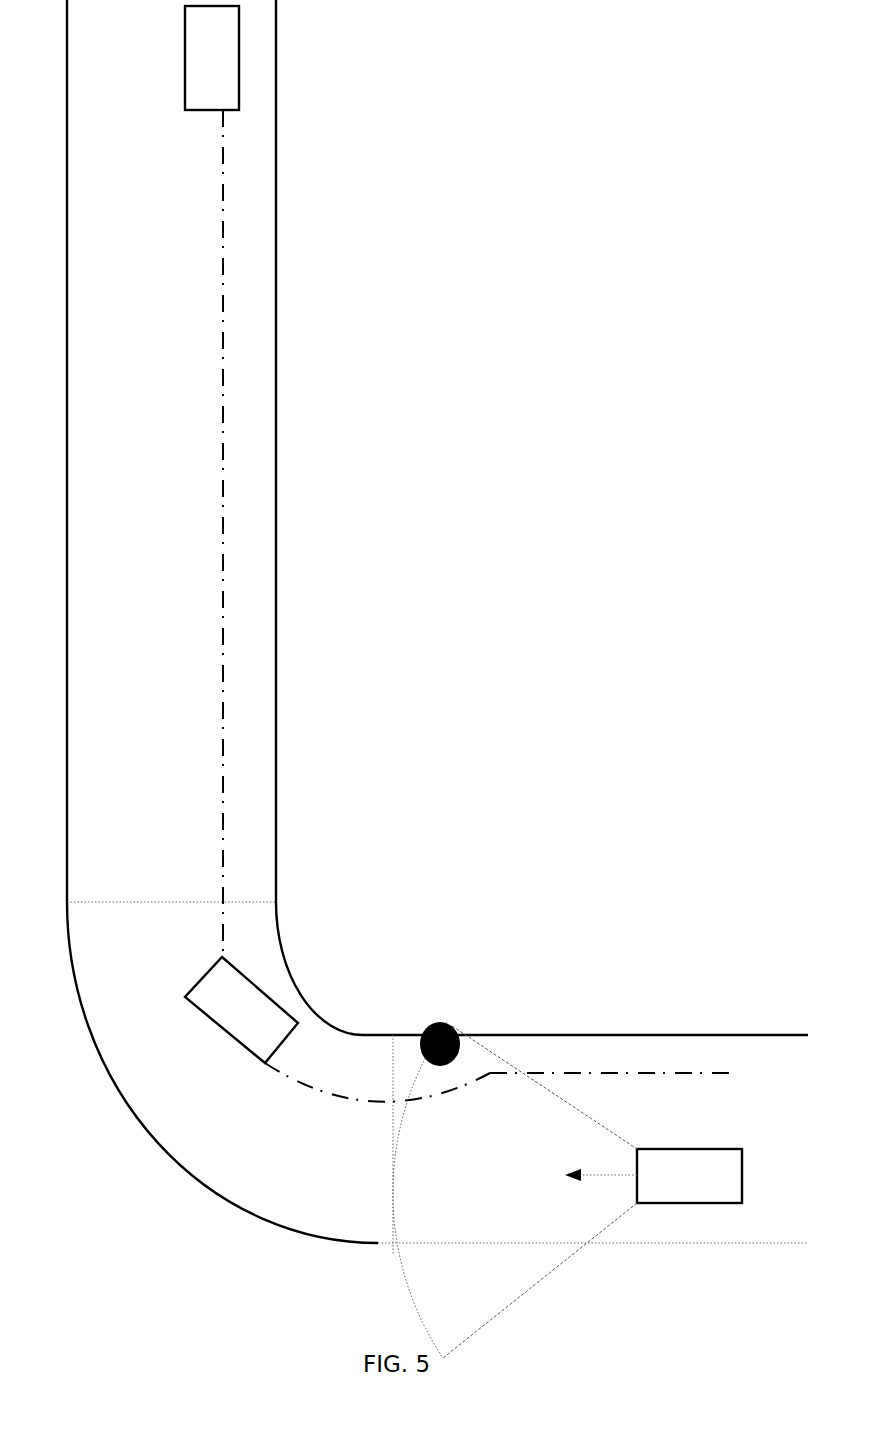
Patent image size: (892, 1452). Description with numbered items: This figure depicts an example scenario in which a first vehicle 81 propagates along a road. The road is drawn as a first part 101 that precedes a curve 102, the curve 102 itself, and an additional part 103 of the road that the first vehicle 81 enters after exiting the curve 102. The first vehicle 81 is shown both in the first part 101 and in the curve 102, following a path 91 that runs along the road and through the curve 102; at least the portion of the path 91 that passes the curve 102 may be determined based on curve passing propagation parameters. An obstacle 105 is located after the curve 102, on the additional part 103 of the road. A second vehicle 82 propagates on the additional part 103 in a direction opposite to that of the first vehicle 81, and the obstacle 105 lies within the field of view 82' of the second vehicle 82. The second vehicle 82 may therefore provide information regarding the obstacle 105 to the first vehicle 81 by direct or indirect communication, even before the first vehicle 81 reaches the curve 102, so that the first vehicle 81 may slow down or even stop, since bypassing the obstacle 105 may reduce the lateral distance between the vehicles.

The first vehicle 81 is at (241, 534).
The second vehicle 82 is at (653, 1176).
The field of view 82' is at (550, 1190).
The path 91 is at (220, 580).
The first part 101 is at (171, 451).
The curve 102 is at (222, 1072).
The horizontal pipe section 103 is at (585, 1145).
The obstacle 105 is at (441, 1044).